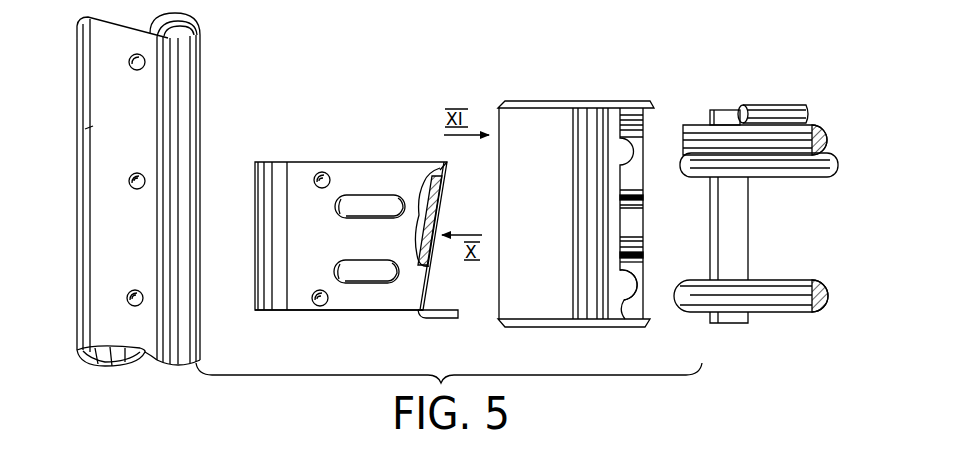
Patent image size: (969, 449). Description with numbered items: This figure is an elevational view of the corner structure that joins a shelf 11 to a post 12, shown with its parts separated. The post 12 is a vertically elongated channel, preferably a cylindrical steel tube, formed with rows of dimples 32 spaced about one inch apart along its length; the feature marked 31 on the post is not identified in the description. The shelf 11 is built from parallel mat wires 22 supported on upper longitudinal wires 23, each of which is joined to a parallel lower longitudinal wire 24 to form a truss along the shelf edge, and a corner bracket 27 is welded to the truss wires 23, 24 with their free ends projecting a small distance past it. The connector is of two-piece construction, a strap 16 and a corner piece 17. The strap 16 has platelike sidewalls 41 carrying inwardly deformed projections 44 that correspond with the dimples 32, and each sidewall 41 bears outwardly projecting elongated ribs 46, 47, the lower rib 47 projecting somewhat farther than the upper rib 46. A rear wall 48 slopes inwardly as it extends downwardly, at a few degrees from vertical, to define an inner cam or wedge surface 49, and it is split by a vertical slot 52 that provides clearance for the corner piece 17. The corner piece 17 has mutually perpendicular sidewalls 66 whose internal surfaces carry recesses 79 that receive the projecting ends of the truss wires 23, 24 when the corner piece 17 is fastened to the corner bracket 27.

The shelf 11 is at (835, 112).
The post 12 is at (202, 96).
The strap 16 is at (350, 160).
The corner piece 17 is at (590, 99).
The mat wires 22 is at (769, 108).
The upper longitudinal wires 23 is at (804, 140).
The lower longitudinal wire 24 is at (784, 288).
The corner bracket 27 is at (740, 224).
The flange of channel member 31 is at (97, 126).
The dimples 32 is at (128, 182).
The sidewalls 41 is at (351, 312).
The projections 44 is at (317, 172).
The upper rib 46 is at (386, 206).
The lower rib 47 is at (372, 284).
The rear wall 48 is at (447, 217).
The cam or wedge surface 49 is at (438, 169).
The central slot 52 is at (446, 320).
The sidewalls of corner piece 66 is at (534, 294).
The recesses 79 is at (622, 302).